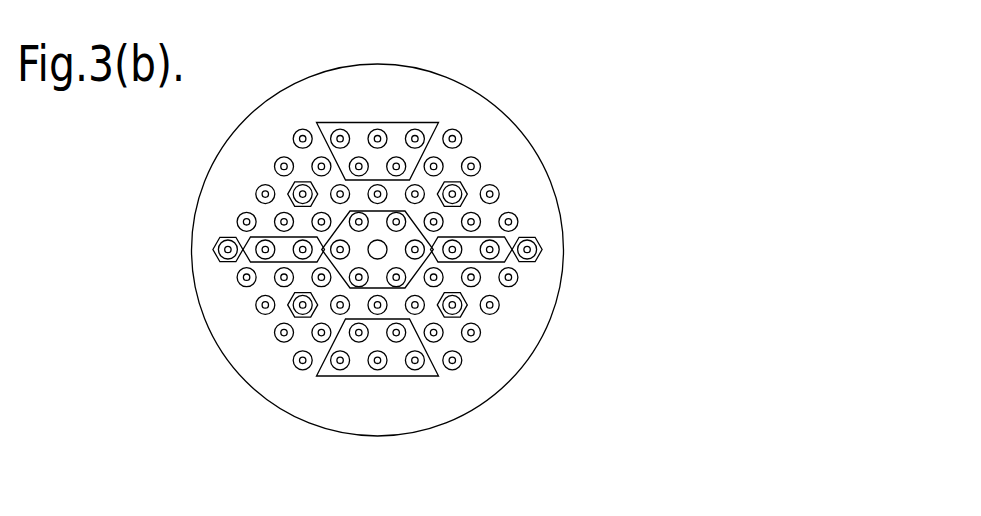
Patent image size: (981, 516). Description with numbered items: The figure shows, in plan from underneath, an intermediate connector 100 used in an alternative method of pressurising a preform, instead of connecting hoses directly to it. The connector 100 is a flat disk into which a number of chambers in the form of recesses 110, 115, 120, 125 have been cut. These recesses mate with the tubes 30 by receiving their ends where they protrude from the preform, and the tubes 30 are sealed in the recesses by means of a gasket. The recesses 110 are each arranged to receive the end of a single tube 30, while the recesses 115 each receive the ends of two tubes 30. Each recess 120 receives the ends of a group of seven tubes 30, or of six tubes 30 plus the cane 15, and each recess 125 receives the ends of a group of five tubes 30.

The intermediate connector 100 is at (542, 122).
The cane 15 is at (378, 249).
The tubes 30 is at (461, 363).
The recesses 110 is at (298, 182).
The recesses 115 is at (273, 237).
The recess 120 is at (330, 263).
The recess 125 is at (365, 122).